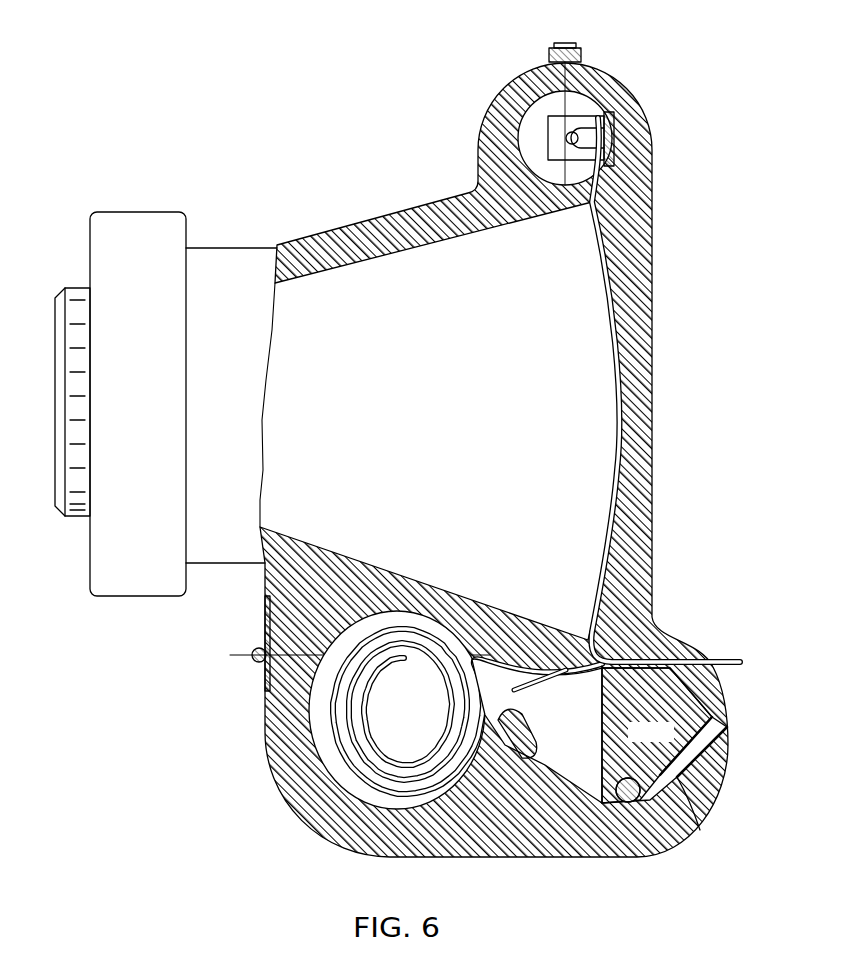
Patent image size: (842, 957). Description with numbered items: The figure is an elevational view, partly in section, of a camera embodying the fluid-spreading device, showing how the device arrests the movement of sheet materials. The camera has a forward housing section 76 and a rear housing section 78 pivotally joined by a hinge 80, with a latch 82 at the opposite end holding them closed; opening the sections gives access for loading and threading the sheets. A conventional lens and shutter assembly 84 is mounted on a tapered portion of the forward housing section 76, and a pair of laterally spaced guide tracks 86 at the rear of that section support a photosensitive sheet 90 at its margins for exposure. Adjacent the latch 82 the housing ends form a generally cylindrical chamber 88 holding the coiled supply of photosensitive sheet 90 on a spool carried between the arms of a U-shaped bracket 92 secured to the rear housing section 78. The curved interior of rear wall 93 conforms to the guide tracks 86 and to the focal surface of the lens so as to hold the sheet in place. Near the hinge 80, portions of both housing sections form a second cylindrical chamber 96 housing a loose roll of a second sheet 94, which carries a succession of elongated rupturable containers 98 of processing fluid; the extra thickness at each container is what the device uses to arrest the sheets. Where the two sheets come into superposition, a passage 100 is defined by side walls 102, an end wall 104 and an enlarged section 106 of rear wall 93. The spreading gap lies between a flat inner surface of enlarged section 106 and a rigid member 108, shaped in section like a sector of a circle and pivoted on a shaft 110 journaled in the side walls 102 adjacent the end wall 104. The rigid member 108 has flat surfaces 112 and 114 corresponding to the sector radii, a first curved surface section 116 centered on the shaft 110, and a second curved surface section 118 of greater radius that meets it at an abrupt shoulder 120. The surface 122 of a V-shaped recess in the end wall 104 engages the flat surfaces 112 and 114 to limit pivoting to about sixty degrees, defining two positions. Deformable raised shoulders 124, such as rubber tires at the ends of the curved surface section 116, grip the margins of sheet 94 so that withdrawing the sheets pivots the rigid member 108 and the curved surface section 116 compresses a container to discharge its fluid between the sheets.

The forward housing section 76 is at (262, 570).
The rear housing section 78 is at (656, 163).
The hinge 80 is at (250, 655).
The latch 82 is at (578, 48).
The lens and shutter assembly 84 is at (90, 286).
The guide tracks 86 is at (606, 254).
The cylindrical chamber 88 is at (526, 128).
The photosensitive sheet material 90 is at (624, 304).
The U-shaped bracket 92 is at (615, 86).
The rear wall 93 is at (642, 358).
The second sheet 94 is at (430, 750).
The cylindrical chamber 96 is at (348, 780).
The rupturable containers 98 is at (522, 688).
The passage 100 is at (694, 688).
The side walls 102 is at (599, 731).
The end wall 104 is at (600, 858).
The enlarged section 106 is at (640, 612).
The rigid member 108 is at (657, 735).
The shaft 110 is at (632, 804).
The flat surface 112 is at (602, 690).
The flat surface 114 is at (722, 745).
The first curved surface section 116 is at (703, 700).
The second curved surface section 118 is at (624, 668).
The abrupt shoulder 120 is at (700, 672).
The V-shaped recess surface 122 is at (703, 816).
The raised shoulders 124 is at (712, 718).